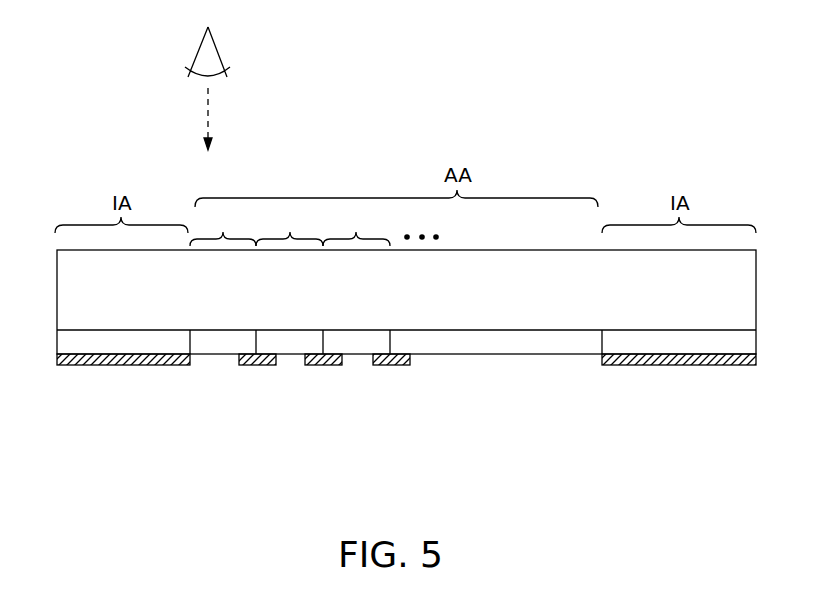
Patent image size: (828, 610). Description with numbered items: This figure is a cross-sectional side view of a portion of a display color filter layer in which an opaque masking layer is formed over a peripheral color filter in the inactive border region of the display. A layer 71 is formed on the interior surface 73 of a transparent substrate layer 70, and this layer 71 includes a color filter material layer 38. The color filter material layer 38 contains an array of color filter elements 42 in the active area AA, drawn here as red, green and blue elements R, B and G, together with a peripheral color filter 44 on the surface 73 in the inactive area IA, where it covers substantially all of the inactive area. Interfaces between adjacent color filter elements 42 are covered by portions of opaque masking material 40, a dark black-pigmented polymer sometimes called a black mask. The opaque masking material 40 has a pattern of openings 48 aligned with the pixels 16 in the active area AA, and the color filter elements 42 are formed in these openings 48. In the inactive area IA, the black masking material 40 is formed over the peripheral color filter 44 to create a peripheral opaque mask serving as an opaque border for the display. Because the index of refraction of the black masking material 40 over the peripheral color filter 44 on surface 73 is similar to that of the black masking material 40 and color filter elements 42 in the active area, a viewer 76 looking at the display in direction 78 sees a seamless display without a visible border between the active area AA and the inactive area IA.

The pixels 16 is at (290, 226).
The color filter material layer 38 is at (760, 342).
The opaque masking material 40 is at (173, 366).
The color filter elements 42 is at (313, 332).
The peripheral color filter 44 is at (147, 335).
The openings 48 is at (215, 366).
The transparent substrate layer 70 is at (742, 287).
The layer 71 is at (52, 330).
The interior surface 73 is at (540, 331).
The viewer 76 is at (218, 50).
The direction 78 is at (208, 123).